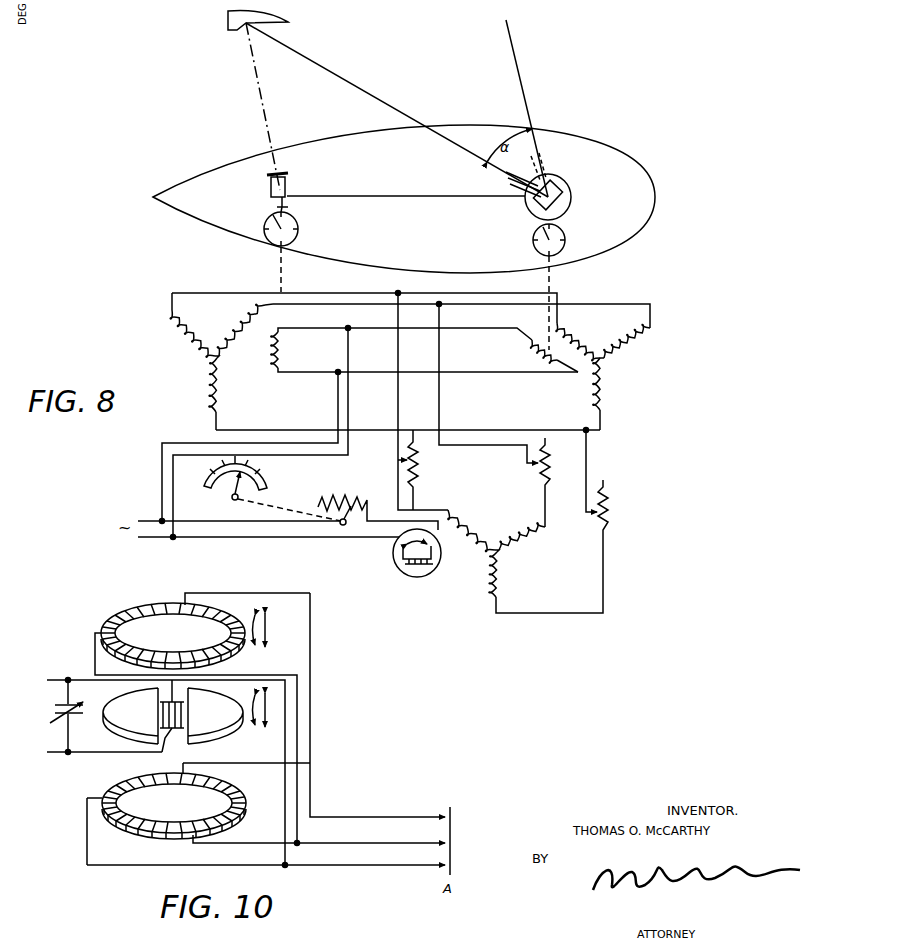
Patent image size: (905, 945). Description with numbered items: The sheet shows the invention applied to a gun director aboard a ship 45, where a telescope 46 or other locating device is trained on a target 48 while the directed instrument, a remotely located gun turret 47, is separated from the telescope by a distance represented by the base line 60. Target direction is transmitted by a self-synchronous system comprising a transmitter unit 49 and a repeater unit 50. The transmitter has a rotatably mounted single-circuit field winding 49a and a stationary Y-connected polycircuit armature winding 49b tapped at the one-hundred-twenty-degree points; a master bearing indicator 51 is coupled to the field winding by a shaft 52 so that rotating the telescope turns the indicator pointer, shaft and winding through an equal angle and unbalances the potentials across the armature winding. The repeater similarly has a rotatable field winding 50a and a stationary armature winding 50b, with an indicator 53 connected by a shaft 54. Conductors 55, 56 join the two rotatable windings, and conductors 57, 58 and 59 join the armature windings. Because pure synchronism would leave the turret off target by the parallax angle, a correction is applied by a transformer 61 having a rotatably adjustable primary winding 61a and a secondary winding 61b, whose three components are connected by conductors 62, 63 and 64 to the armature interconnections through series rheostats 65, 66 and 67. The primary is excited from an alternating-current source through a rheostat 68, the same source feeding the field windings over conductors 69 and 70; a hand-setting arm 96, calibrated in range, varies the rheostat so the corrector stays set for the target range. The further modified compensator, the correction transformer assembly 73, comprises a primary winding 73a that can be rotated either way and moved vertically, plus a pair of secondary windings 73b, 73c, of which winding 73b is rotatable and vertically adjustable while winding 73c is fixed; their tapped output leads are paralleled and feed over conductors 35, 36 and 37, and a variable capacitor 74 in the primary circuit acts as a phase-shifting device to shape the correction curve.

In FIG. 8, the ship 45 is at (200, 228).
In FIG. 8, the telescope 46 is at (270, 188).
In FIG. 8, the gun turret 47 is at (563, 187).
In FIG. 8, the target 48 is at (228, 25).
In FIG. 8, the transmitter unit 49 is at (216, 361).
In FIG. 8, the field winding 49a is at (275, 350).
In FIG. 8, the armature winding 49b is at (208, 374).
In FIG. 8, the repeater unit 50 is at (574, 376).
In FIG. 8, the field winding 50a is at (535, 346).
In FIG. 8, the armature winding 50b is at (604, 365).
In FIG. 8, the master bearing indicator 51 is at (268, 243).
In FIG. 8, the shaft 52 is at (278, 272).
In FIG. 8, the indicator 53 is at (534, 234).
In FIG. 8, the shaft 54 is at (552, 285).
In FIG. 8, the conductor 55 is at (388, 330).
In FIG. 8, the conductor 56 is at (382, 368).
In FIG. 8, the conductor 57 is at (297, 293).
In FIG. 8, the conductor 58 is at (503, 307).
In FIG. 8, the conductor 59 is at (480, 430).
In FIG. 8, the base line 60 is at (389, 196).
In FIG. 8, the transformer 61 is at (450, 553).
In FIG. 8, the primary winding 61a is at (396, 560).
In FIG. 8, the secondary winding 61b is at (503, 556).
In FIG. 8, the conductor 62 is at (397, 400).
In FIG. 8, the conductor 63 is at (441, 397).
In FIG. 8, the conductor 64 is at (590, 460).
In FIG. 8, the rheostat 65 is at (405, 471).
In FIG. 8, the rheostat 66 is at (538, 479).
In FIG. 8, the rheostat 67 is at (607, 505).
In FIG. 8, the rheostat 68 is at (337, 492).
In FIG. 8, the conductor 69 is at (337, 408).
In FIG. 8, the conductor 70 is at (347, 446).
In FIG. 8, the hand-setting arm 96 is at (232, 480).
In FIG. 10, the coil assembly 73 is at (162, 709).
In FIG. 10, the primary winding 73a is at (184, 714).
In FIG. 10, the secondary winding 73b is at (143, 606).
In FIG. 10, the secondary winding 73c is at (110, 785).
In FIG. 10, the variable capacitor 74 is at (55, 704).
In FIG. 10, the conductor 35 is at (377, 706).
In FIG. 10, the conductor 36 is at (319, 835).
In FIG. 10, the conductor 37 is at (266, 858).